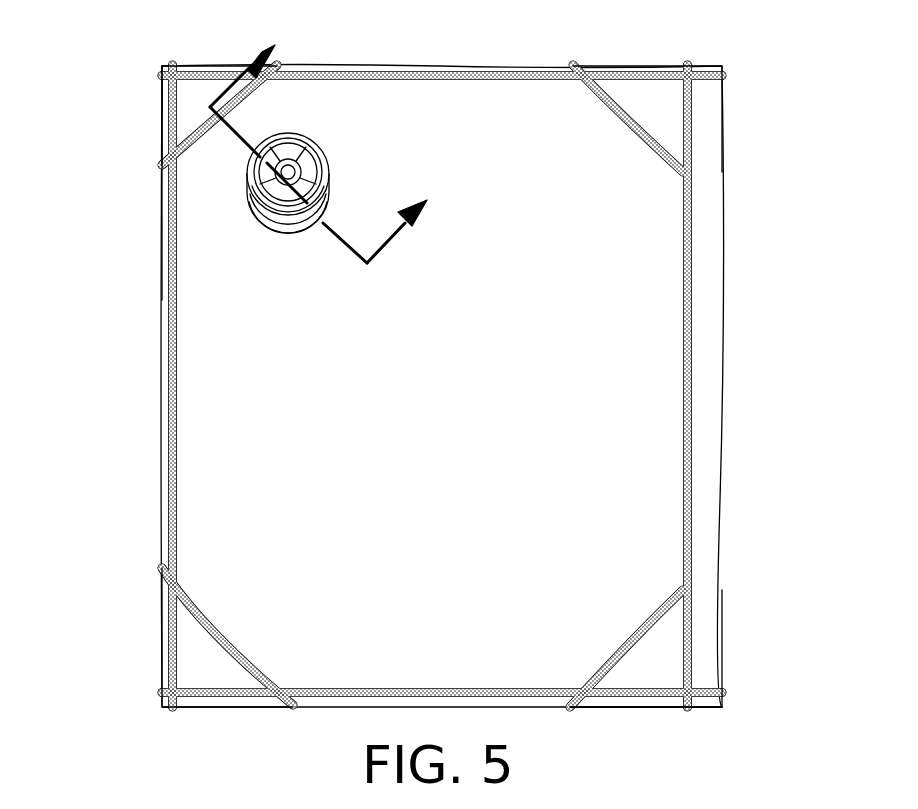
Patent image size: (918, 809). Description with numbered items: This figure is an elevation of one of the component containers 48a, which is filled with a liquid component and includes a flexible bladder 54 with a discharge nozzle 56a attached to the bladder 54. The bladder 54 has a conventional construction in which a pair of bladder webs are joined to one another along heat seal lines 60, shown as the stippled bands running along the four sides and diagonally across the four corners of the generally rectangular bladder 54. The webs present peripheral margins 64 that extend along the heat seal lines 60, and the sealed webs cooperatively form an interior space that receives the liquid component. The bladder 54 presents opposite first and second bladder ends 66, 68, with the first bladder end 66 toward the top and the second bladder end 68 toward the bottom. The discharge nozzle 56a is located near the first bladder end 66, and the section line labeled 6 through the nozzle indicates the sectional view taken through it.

The container 48a is at (415, 389).
The flexible bladder 54 is at (242, 377).
The discharge nozzle 56a is at (325, 157).
The heat seal lines 60 is at (538, 75).
The peripheral margins 64 is at (192, 90).
The first bladder end 66 is at (124, 149).
The second bladder end 68 is at (711, 727).
The section line 6- 6 is at (332, 136).